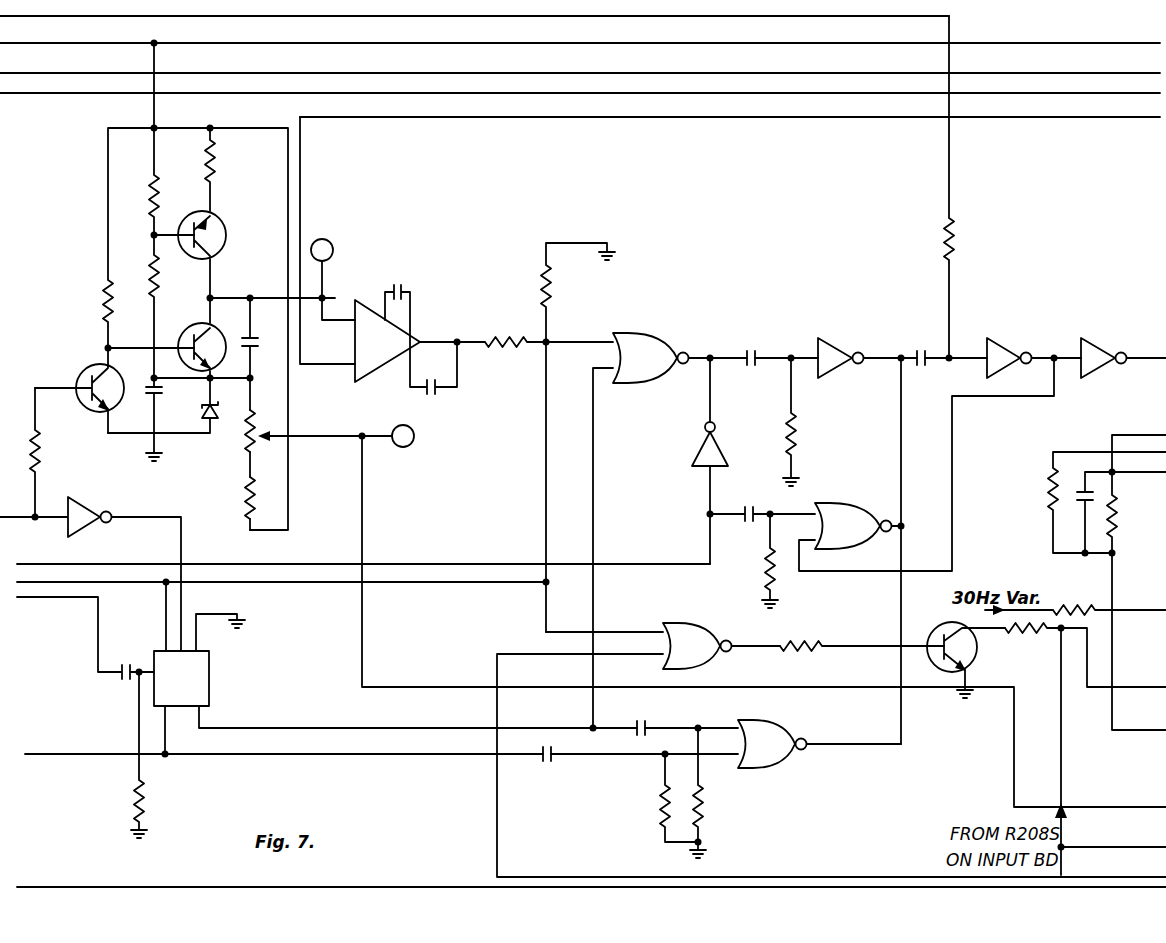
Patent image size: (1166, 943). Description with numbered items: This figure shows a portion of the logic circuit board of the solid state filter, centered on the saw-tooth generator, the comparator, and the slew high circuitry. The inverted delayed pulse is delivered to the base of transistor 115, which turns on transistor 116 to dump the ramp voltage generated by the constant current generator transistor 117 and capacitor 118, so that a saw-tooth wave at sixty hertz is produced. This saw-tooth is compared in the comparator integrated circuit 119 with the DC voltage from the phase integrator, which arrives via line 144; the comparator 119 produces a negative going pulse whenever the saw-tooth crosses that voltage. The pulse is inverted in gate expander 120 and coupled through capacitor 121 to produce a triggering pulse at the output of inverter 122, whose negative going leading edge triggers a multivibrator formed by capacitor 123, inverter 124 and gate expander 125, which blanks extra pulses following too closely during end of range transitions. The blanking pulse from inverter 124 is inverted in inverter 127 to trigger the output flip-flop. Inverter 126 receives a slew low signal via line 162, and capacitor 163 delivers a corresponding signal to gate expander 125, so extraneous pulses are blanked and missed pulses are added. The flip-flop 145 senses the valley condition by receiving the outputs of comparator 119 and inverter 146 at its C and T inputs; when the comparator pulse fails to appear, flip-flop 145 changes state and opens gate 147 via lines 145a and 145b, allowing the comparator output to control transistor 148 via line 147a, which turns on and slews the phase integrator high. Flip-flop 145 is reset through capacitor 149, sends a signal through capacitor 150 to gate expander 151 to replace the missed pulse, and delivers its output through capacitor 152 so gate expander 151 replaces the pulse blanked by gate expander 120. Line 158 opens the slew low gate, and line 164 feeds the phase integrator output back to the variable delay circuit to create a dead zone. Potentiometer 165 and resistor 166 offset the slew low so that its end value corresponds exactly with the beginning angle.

The transistor 115 is at (82, 367).
The transistor 116 is at (205, 324).
The constant current generator transistor 117 is at (217, 223).
The capacitor 118 is at (246, 335).
The comparator integrated circuit 119 is at (380, 372).
The gate expander 120 is at (627, 332).
The capacitor 121 is at (760, 350).
The inverter 122 is at (836, 348).
The capacitor 123 is at (918, 350).
The inverter 124 is at (1008, 346).
The gate expander 125 is at (850, 504).
The inverter 126 is at (713, 446).
The inverter 127 is at (1108, 346).
The line 144 is at (302, 183).
The flip-flop 145 is at (212, 668).
The line 145a is at (370, 756).
The line 145b is at (497, 655).
The inverter 146 is at (74, 498).
The gate 147 is at (686, 624).
The line 147a is at (612, 632).
The transistor 148 is at (980, 655).
The capacitor 149 is at (121, 665).
The capacitor 150 is at (554, 760).
The gate expander 151 is at (769, 768).
The capacitor 152 is at (646, 722).
The line 158 is at (440, 887).
The line 162 is at (662, 564).
The capacitor 163 is at (746, 512).
The line 164 is at (858, 118).
The potentiometer 165 is at (248, 423).
The resistor 166 is at (244, 492).